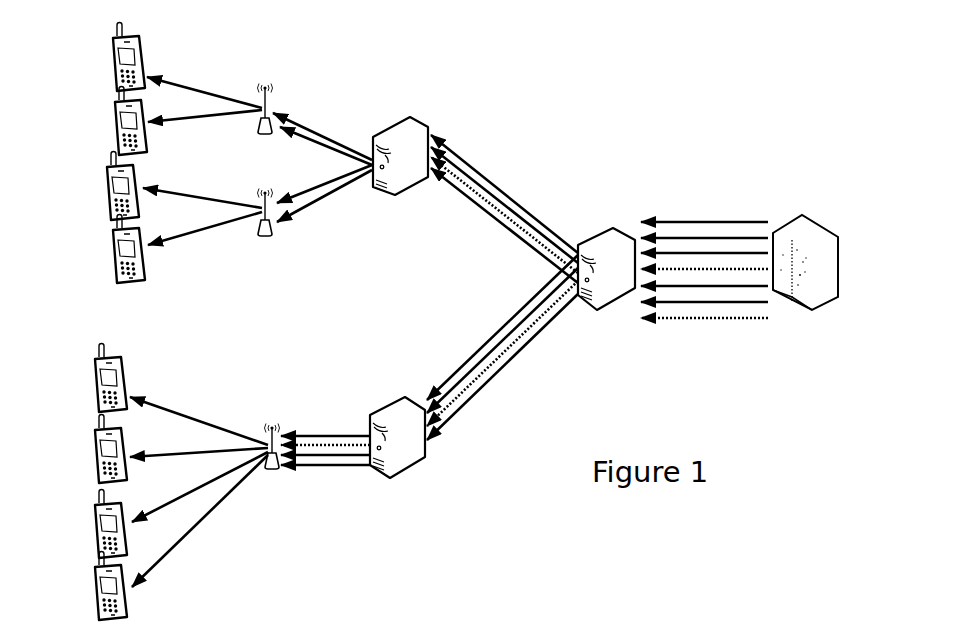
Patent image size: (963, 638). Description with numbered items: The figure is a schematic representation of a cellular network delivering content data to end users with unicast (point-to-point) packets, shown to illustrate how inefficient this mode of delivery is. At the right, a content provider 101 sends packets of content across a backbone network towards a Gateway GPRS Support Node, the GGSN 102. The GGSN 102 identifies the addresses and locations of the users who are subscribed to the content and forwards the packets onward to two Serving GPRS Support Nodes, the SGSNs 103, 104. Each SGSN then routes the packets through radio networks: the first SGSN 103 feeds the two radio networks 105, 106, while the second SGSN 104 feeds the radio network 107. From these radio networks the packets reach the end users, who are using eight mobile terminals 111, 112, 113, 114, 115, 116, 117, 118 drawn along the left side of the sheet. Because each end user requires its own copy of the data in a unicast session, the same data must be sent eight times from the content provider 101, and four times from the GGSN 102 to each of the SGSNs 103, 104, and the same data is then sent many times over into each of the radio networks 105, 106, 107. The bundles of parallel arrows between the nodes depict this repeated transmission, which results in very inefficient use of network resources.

The content provider 101 is at (839, 262).
The Gateway GPRS Support Node (GGSN) 102 is at (585, 303).
The Serving GPRS Support Node (SGSN) 103 is at (431, 128).
The Serving GPRS Support Node (SGSN) 104 is at (427, 456).
The radio network 105 is at (266, 108).
The radio network 106 is at (276, 232).
The radio network 107 is at (282, 432).
The mobile terminal 111 is at (113, 62).
The mobile terminal 112 is at (115, 137).
The mobile terminal 113 is at (108, 205).
The mobile terminal 114 is at (113, 265).
The mobile terminal 115 is at (95, 383).
The mobile terminal 116 is at (95, 460).
The mobile terminal 117 is at (95, 532).
The mobile terminal 118 is at (95, 593).